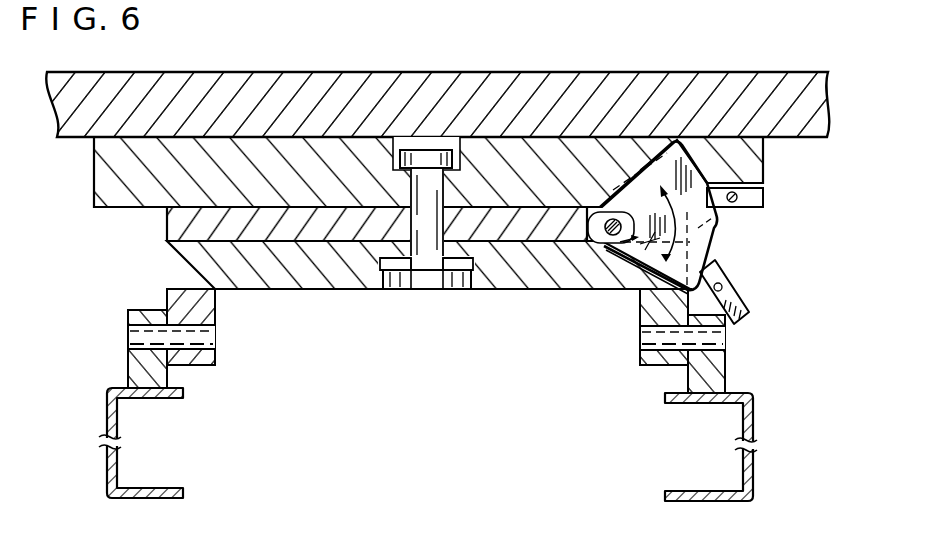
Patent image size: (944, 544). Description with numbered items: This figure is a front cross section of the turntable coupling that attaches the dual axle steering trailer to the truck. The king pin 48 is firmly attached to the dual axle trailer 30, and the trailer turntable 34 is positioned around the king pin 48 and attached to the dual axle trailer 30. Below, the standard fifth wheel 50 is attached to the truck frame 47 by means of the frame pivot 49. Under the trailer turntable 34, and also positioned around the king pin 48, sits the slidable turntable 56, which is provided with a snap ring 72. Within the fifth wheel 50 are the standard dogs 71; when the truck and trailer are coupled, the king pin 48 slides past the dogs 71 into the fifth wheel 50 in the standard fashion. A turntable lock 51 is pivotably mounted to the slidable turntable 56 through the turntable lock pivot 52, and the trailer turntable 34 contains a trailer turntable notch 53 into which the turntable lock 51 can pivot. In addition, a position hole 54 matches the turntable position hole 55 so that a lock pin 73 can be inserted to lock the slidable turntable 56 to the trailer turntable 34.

The dual axle trailer 30 is at (241, 74).
The trailer turntable 34 is at (119, 187).
The truck frame 47 is at (107, 462).
The king pin 48 is at (404, 146).
The frame pivot 49 is at (211, 337).
The standard fifth wheel 50 is at (277, 273).
The turntable lock 51 is at (714, 246).
The turntable lock pivot 52 is at (612, 219).
The trailer turntable notch 53 is at (637, 168).
The position hole 54 is at (751, 299).
The turntable position hole 55 is at (733, 206).
The slidable turntable 56 is at (174, 225).
The dogs 71 is at (470, 284).
The snap ring 72 is at (412, 240).
The lock pin 73 is at (739, 200).